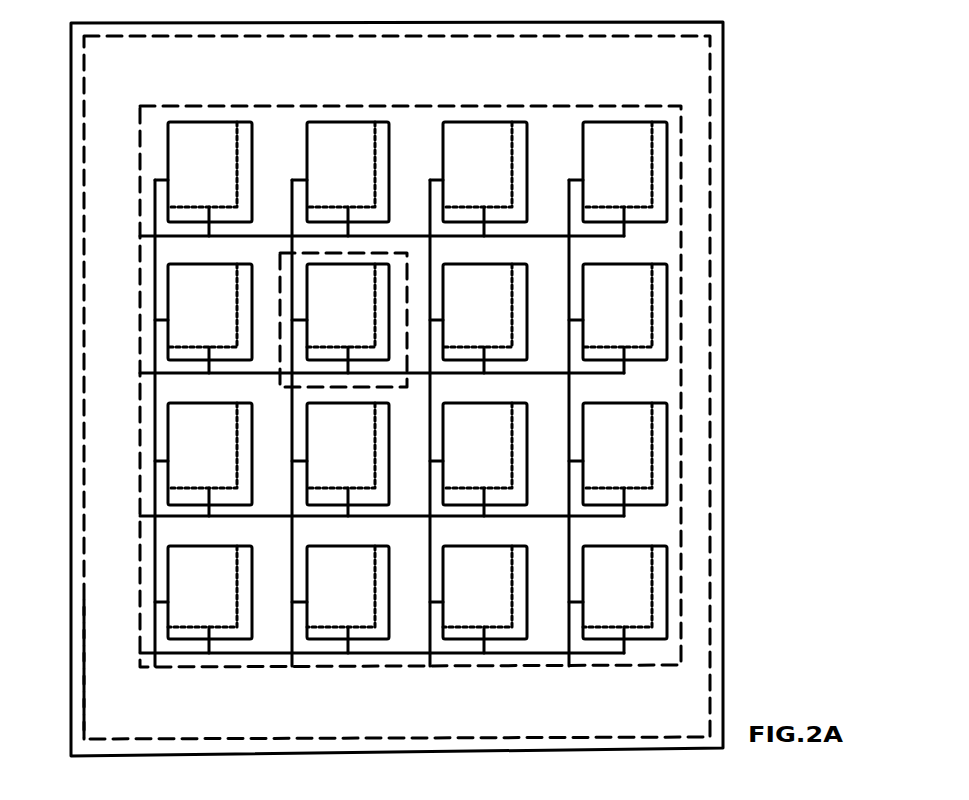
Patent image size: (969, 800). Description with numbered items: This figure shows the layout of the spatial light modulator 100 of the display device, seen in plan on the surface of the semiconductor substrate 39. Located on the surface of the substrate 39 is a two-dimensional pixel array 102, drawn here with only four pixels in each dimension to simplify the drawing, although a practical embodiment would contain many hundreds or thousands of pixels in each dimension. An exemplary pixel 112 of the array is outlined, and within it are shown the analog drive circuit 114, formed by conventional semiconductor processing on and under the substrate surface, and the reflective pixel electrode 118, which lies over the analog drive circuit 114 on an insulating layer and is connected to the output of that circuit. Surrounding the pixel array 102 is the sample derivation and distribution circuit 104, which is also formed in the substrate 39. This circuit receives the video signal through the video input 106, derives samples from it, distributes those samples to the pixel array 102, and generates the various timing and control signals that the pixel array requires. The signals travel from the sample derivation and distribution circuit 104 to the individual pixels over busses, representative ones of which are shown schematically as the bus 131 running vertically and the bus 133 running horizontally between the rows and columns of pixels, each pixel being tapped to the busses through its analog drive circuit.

The spatial light modulator 100 is at (729, 76).
The pixel array 102 is at (686, 173).
The sample derivation and distribution circuit 104 is at (367, 90).
The video input 106 is at (74, 669).
The semiconductor substrate 39 is at (660, 243).
The pixel 112 is at (280, 387).
The analog drive circuit 114 is at (375, 275).
The reflective pixel electrode 118 is at (355, 324).
The bus 131 is at (293, 531).
The bus 133 is at (280, 518).